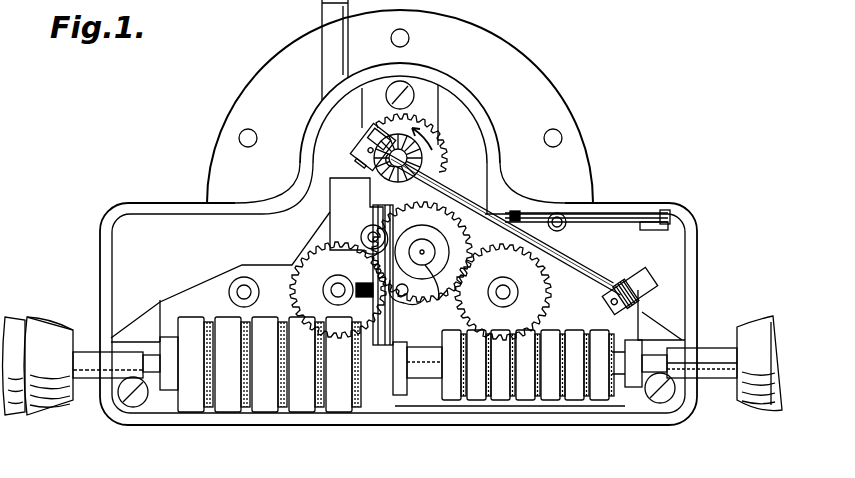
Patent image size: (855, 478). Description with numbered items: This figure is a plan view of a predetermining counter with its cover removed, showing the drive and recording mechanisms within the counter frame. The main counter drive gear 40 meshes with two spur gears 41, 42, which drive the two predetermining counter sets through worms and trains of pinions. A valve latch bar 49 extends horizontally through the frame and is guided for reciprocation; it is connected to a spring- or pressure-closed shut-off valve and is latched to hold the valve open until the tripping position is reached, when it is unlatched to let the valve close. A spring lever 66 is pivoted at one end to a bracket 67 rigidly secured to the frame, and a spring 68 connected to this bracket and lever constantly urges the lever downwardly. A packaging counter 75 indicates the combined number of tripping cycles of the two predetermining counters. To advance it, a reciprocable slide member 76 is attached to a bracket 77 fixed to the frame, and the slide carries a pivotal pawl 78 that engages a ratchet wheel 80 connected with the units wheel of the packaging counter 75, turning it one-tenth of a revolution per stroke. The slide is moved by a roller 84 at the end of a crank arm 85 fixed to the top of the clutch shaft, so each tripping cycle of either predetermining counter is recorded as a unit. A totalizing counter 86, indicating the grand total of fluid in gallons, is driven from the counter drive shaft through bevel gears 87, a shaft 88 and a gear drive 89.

The valve latch bar 49 is at (330, 16).
The bracket 77 is at (345, 184).
The bevel gears 87 is at (380, 172).
The reciprocable slide member 76 is at (387, 206).
The main counter drive gear 40 is at (434, 228).
The spur gear 41 is at (340, 272).
The spur gear 42 is at (514, 275).
The pivotal pawl 78 is at (376, 318).
The roller 84 is at (416, 305).
The crank arm 85 is at (443, 290).
The shaft 88 is at (567, 262).
The gear drive 89 is at (612, 306).
The spring lever 66 is at (620, 224).
The bracket 67 is at (661, 232).
The spring 68 is at (565, 231).
The packaging counter 75 is at (312, 408).
The ratchet wheel 80 is at (384, 400).
The totalizing counter 86 is at (525, 404).